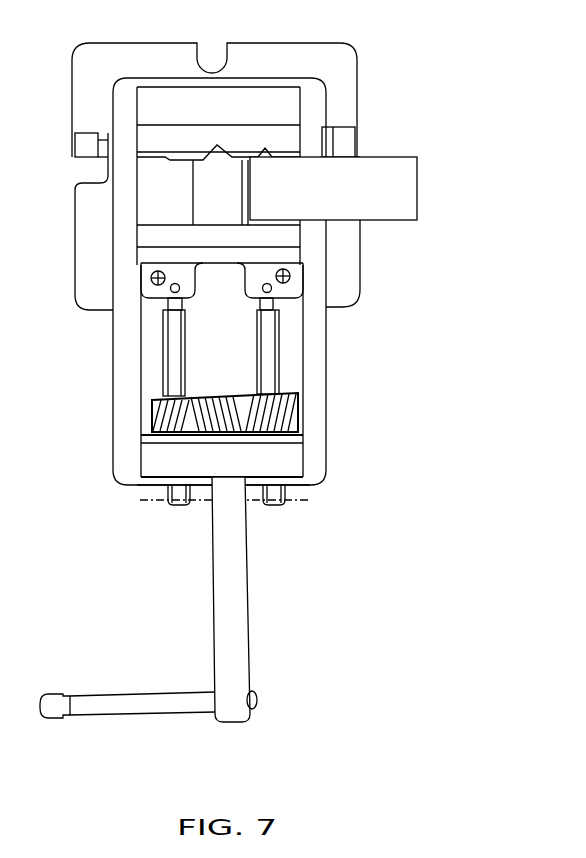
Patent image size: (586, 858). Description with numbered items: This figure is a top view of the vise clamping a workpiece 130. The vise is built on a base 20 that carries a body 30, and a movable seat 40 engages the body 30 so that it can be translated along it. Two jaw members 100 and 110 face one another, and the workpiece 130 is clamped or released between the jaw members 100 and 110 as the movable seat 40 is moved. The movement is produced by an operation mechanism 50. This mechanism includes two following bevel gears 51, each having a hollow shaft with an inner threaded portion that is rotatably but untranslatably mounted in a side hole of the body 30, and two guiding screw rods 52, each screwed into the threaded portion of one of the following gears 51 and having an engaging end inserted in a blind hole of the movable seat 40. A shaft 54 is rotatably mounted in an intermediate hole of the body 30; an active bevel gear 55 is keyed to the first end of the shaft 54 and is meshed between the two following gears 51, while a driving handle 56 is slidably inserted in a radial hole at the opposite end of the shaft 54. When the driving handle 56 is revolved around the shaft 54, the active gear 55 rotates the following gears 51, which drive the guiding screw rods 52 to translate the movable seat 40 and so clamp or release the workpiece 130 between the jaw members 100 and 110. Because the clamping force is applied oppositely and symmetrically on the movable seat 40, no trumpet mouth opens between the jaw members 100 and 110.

The base 20 is at (165, 58).
The body 30 is at (118, 162).
The jaw member 100 is at (284, 138).
The jaw member 110 is at (152, 240).
The workpiece 130 is at (390, 187).
The movable seat 40 is at (263, 272).
The operation mechanism 50 is at (300, 515).
The following bevel gear 51 is at (290, 412).
The guiding screw rod 52 is at (177, 361).
The shaft 54 is at (238, 612).
The active bevel gear 55 is at (223, 424).
The driving handle 56 is at (135, 705).